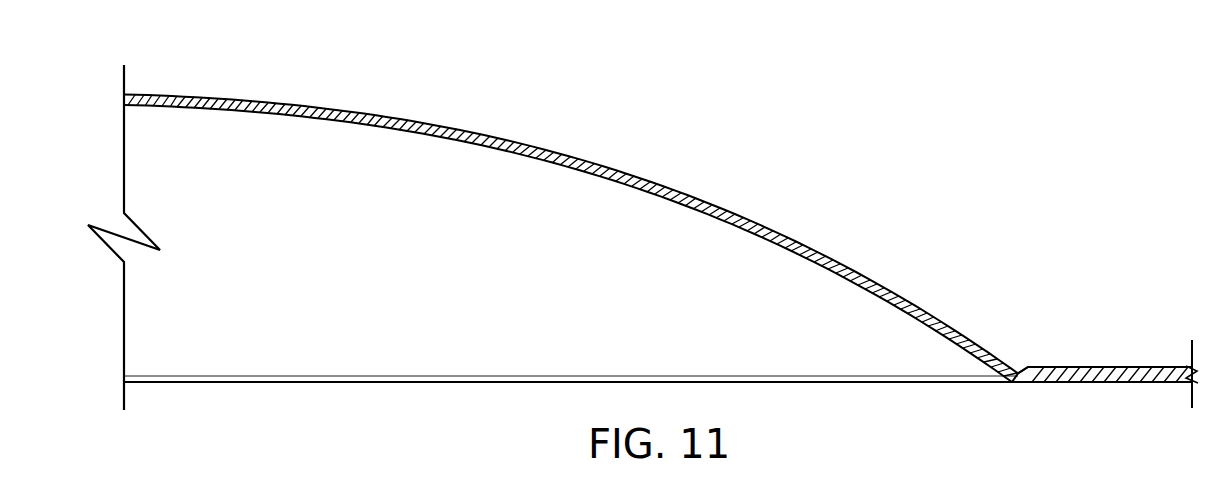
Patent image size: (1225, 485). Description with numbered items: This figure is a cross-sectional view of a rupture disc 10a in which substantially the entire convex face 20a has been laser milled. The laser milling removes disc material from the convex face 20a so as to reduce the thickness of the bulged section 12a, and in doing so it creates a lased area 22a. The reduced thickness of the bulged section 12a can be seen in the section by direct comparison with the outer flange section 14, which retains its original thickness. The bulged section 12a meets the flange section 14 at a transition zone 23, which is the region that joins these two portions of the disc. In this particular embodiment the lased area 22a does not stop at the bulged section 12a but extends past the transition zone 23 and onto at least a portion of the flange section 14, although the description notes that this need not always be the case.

The rupture disc 10a is at (643, 257).
The bulged section 12a is at (737, 223).
The outer flange section 14 is at (1110, 372).
The convex face 20a is at (622, 171).
The lased area 22a is at (910, 293).
The transition zone 23 is at (1018, 384).